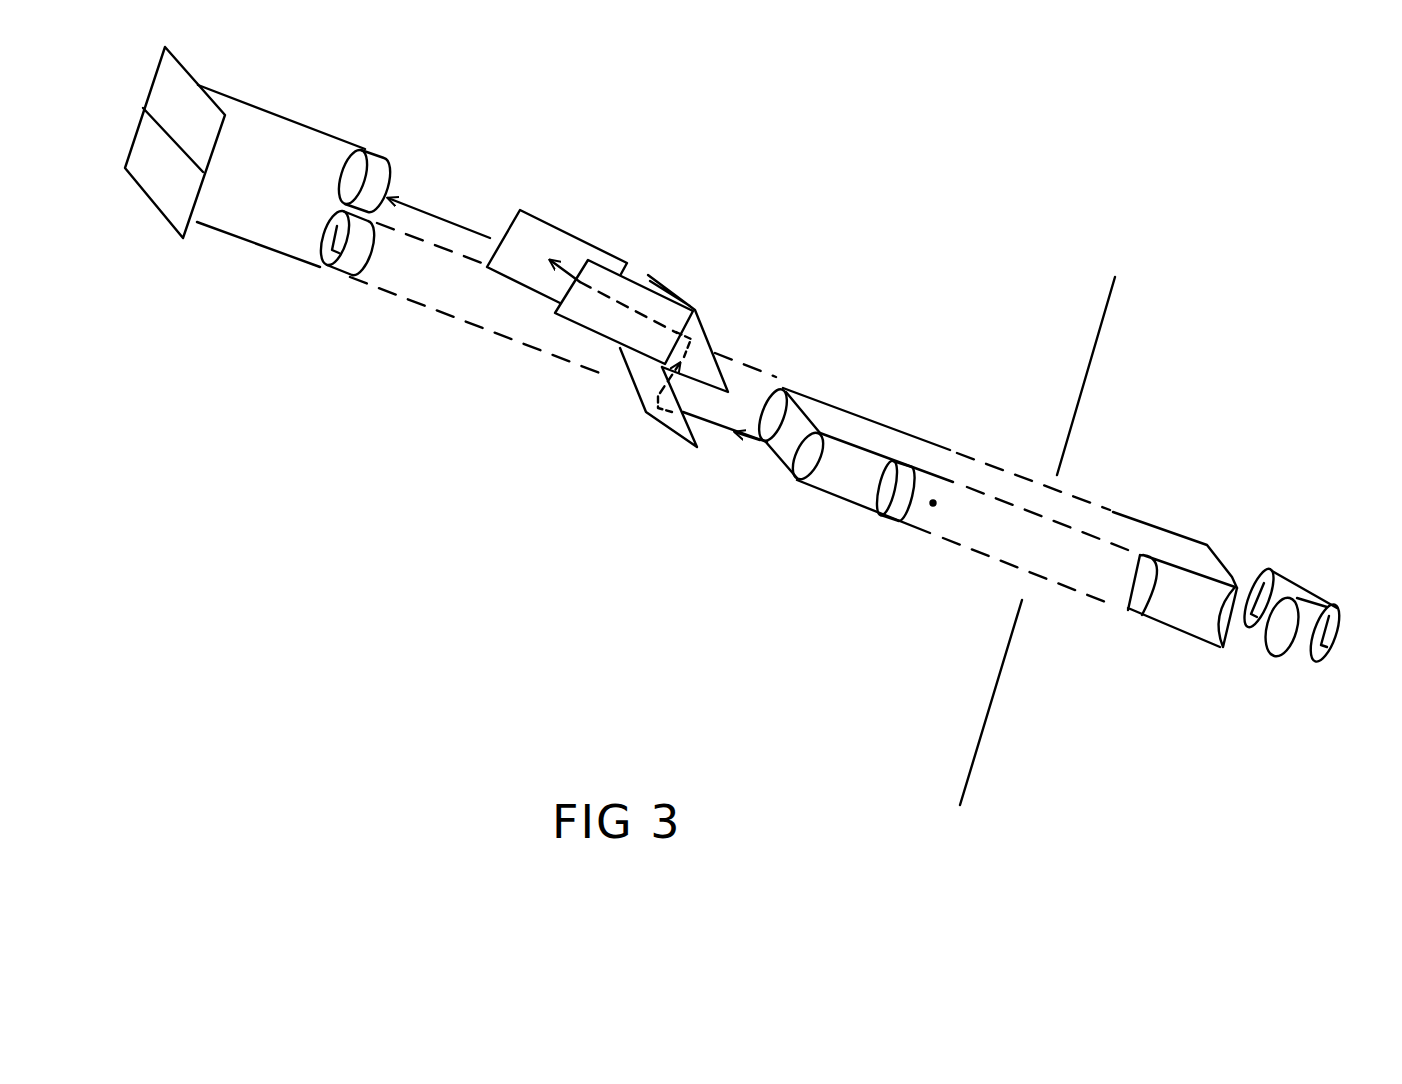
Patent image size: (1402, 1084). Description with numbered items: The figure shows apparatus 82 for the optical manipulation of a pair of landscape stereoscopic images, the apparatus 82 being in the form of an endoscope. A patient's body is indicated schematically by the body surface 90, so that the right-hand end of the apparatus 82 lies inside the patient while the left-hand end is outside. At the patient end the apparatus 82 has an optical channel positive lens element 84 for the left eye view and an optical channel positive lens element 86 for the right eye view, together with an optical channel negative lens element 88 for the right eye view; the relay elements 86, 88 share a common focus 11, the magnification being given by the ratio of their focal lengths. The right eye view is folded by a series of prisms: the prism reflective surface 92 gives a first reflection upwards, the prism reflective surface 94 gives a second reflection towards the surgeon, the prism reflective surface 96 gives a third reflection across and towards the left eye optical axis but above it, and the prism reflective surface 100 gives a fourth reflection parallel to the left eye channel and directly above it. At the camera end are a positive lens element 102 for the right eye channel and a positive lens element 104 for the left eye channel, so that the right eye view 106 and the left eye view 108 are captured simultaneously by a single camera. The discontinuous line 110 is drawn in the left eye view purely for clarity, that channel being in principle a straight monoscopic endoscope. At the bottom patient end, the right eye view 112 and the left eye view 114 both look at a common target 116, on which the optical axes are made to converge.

The common focus 11 is at (933, 503).
The apparatus 82 is at (1032, 165).
The optical channel positive lens element 84 is at (783, 388).
The optical channel positive lens element 86 is at (797, 483).
The optical channel negative lens element 88 is at (883, 475).
The body surface 90 is at (1107, 347).
The prism reflective surface 92 is at (676, 437).
The prism reflective surface 94 is at (710, 344).
The prism reflective surface 96 is at (633, 290).
The prism reflective surface 100 is at (548, 221).
The positive lens element 102 is at (378, 158).
The positive lens element 104 is at (347, 270).
The right eye view 106 is at (165, 78).
The left eye view 108 is at (178, 219).
The discontinuous line 110 is at (520, 345).
The right eye view 112 is at (1280, 660).
The left eye view 114 is at (1263, 567).
The common target 116 is at (1330, 663).